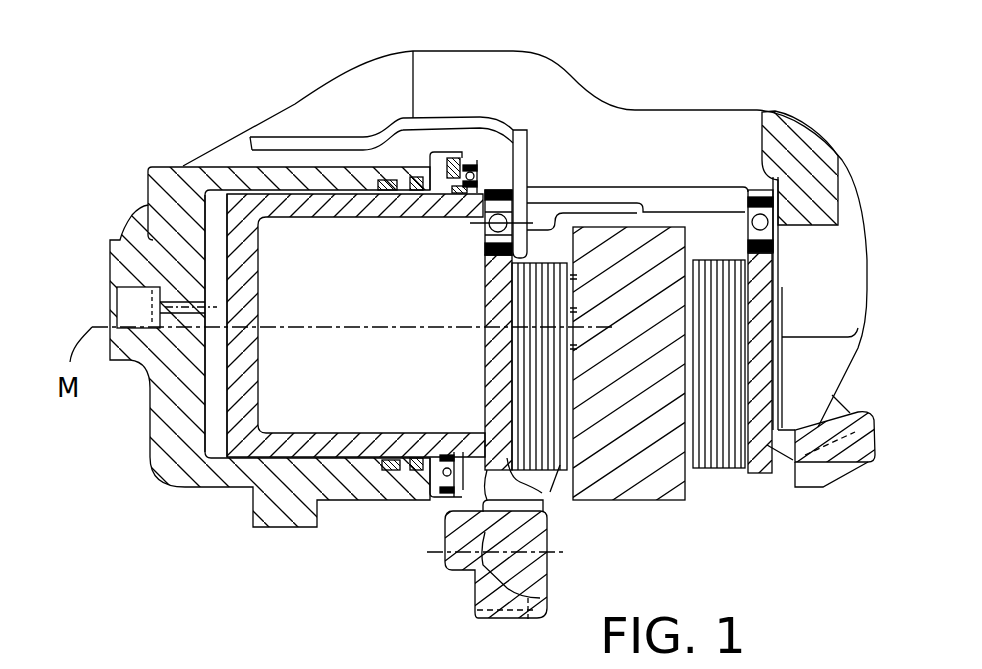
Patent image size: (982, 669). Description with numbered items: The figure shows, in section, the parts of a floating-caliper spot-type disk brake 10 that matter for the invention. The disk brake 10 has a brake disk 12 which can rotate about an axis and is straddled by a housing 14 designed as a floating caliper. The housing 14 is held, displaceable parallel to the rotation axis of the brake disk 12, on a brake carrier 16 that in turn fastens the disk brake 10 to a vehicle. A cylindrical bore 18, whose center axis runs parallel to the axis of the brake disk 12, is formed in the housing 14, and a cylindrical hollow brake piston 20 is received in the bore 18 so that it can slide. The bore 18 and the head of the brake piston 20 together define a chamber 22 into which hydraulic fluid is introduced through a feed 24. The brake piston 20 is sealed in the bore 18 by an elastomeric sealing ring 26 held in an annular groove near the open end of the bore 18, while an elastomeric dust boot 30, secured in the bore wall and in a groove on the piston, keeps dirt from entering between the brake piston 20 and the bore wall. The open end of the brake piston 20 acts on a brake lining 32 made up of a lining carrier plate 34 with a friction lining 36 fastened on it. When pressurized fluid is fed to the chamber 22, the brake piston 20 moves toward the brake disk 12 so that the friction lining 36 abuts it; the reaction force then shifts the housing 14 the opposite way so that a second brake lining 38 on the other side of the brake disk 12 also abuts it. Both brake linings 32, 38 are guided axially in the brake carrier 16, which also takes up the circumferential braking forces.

The disk brake 10 is at (166, 97).
The brake disk 12 is at (640, 483).
The housing 14 is at (560, 97).
The brake carrier 16 is at (475, 593).
The bore 18 is at (196, 441).
The brake piston 20 is at (240, 212).
The chamber 22 is at (214, 363).
The feed 24 is at (137, 297).
The sealing ring 26 is at (393, 460).
The dust boot 30 is at (440, 497).
The brake lining 32 is at (547, 488).
The lining carrier plate 34 is at (500, 277).
The friction lining 36 is at (545, 390).
The second brake lining 38 is at (747, 505).